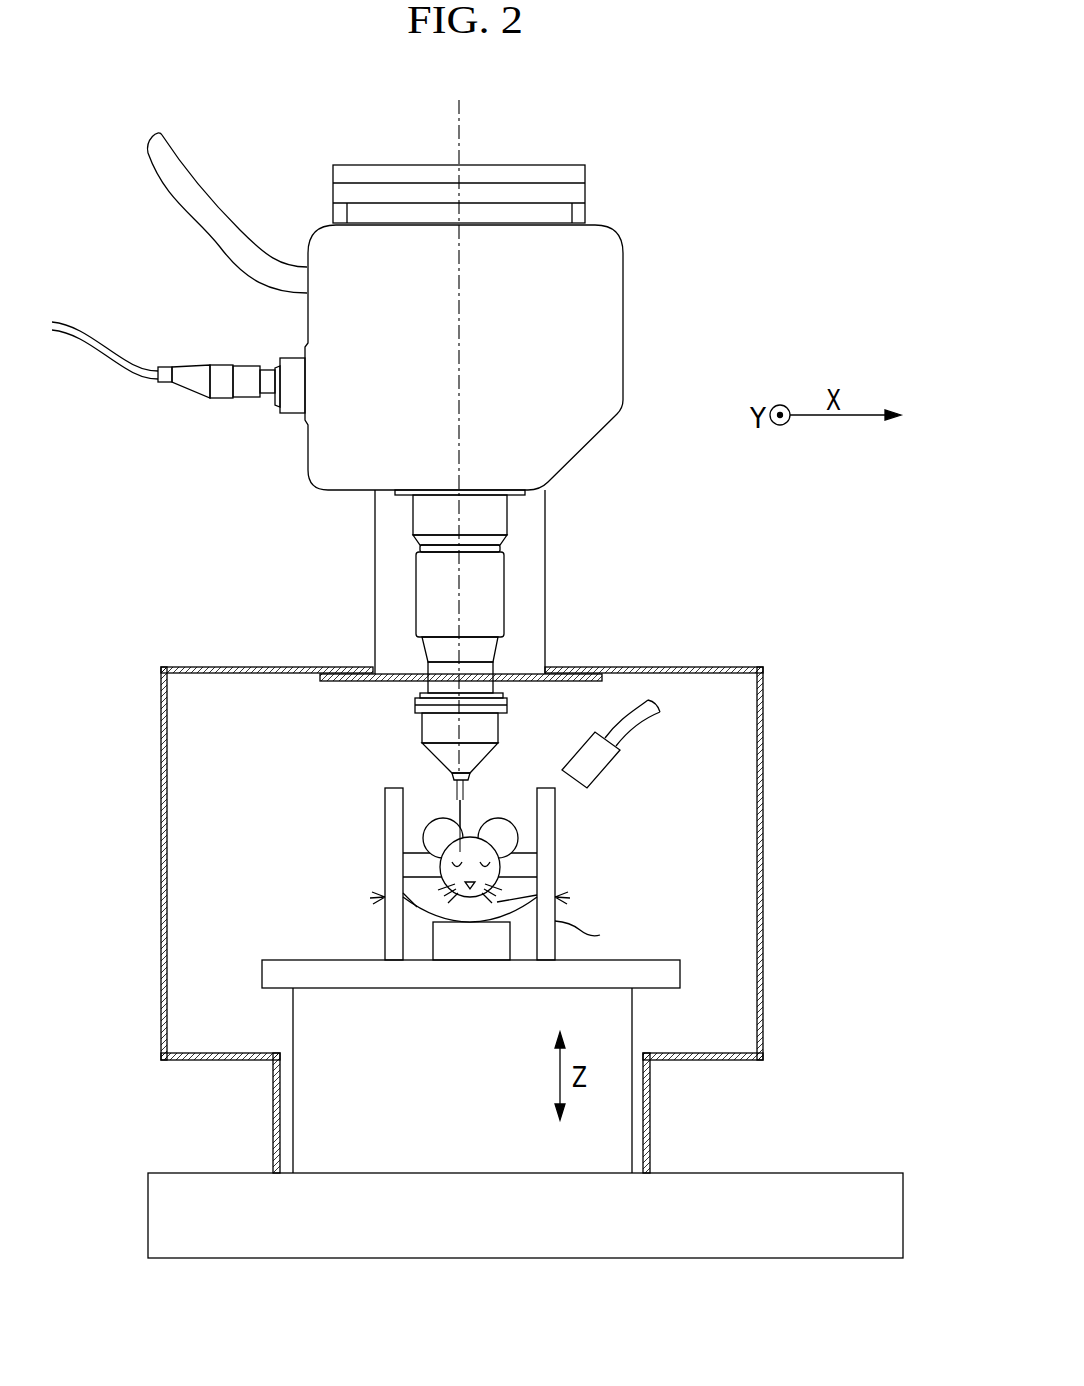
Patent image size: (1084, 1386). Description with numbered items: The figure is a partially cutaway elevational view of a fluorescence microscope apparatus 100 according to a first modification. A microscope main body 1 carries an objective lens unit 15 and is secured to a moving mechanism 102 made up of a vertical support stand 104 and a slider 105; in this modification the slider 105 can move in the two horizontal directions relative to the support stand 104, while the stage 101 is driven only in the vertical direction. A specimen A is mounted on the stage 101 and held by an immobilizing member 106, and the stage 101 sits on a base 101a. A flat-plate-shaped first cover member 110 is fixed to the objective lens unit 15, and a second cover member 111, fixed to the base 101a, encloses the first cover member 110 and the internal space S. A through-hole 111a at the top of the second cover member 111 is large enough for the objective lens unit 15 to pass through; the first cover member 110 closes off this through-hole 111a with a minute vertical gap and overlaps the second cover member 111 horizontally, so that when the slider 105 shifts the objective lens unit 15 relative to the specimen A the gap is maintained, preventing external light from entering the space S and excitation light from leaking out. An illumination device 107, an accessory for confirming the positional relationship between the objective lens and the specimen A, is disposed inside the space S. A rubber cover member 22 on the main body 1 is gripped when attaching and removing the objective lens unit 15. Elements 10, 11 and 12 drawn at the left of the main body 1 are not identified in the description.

The fluorescence microscope apparatus 100 is at (750, 156).
The microscope main body 1 is at (298, 466).
The moving mechanism 102 is at (700, 157).
The slider 105 is at (587, 203).
The support stand 104 is at (545, 513).
The cover member 22 is at (507, 587).
The objective lens unit 15 is at (422, 730).
The tube 12 is at (213, 200).
The cable 10 is at (122, 365).
The connector 11 is at (202, 370).
The internal space S is at (227, 698).
The second cover member 111 is at (738, 665).
The through-hole 111a is at (540, 667).
The first cover member 110 is at (620, 673).
The illumination device 107 is at (607, 768).
The immobilizing member 106 is at (557, 923).
The specimen A is at (432, 900).
The stage 101 is at (680, 977).
The base 101a is at (797, 1173).